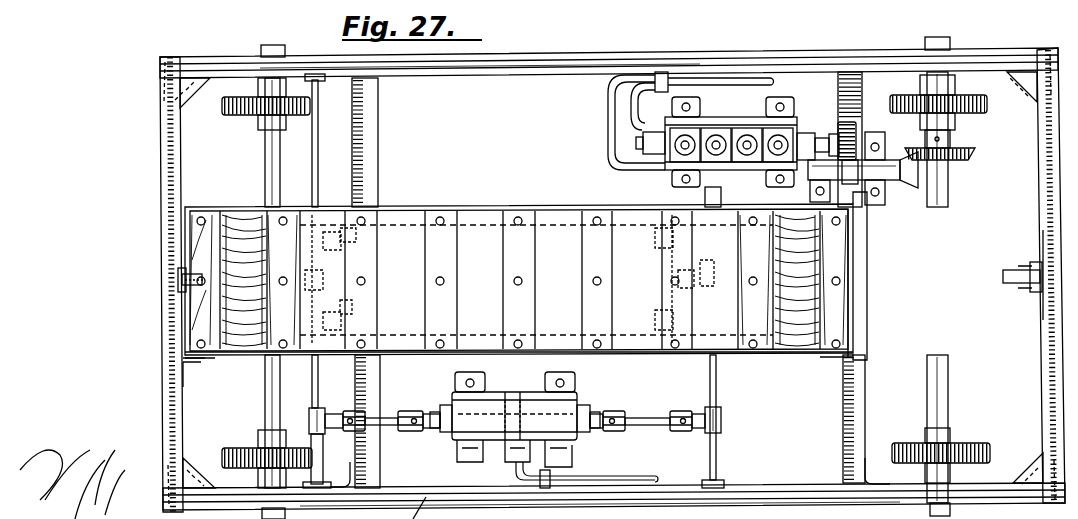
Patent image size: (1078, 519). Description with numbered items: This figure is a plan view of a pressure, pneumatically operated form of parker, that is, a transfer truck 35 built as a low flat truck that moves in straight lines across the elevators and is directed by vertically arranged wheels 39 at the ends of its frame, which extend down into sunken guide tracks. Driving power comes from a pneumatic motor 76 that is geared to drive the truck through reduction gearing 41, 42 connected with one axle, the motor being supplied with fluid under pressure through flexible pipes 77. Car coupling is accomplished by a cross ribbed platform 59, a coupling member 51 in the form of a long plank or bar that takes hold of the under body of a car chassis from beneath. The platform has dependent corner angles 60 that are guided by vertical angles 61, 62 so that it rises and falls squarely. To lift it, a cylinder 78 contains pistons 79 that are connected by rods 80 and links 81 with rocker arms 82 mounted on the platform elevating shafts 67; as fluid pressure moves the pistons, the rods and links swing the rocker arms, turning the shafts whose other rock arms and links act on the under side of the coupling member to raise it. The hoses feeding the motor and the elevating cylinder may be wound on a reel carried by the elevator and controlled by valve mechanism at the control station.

The transfer truck 35 is at (539, 64).
The vertically arranged wheel 39 is at (182, 281).
The reduction gearing 41 is at (836, 131).
The reduction gearing 42 is at (955, 160).
The coupling member 51 is at (519, 279).
The cross ribbed platform 59 is at (266, 182).
The dependent corner angle 60 is at (207, 362).
The vertical angle 61 is at (190, 368).
The vertical angle 62 is at (843, 362).
The platform elevating shaft 67 is at (314, 364).
The pneumatic motor 76 is at (724, 130).
The flexible pipe 77 is at (633, 110).
The cylinder 78 is at (475, 408).
The piston 79 is at (518, 402).
The rod 80 is at (433, 432).
The link 81 is at (386, 414).
The rocker arm 82 is at (322, 412).